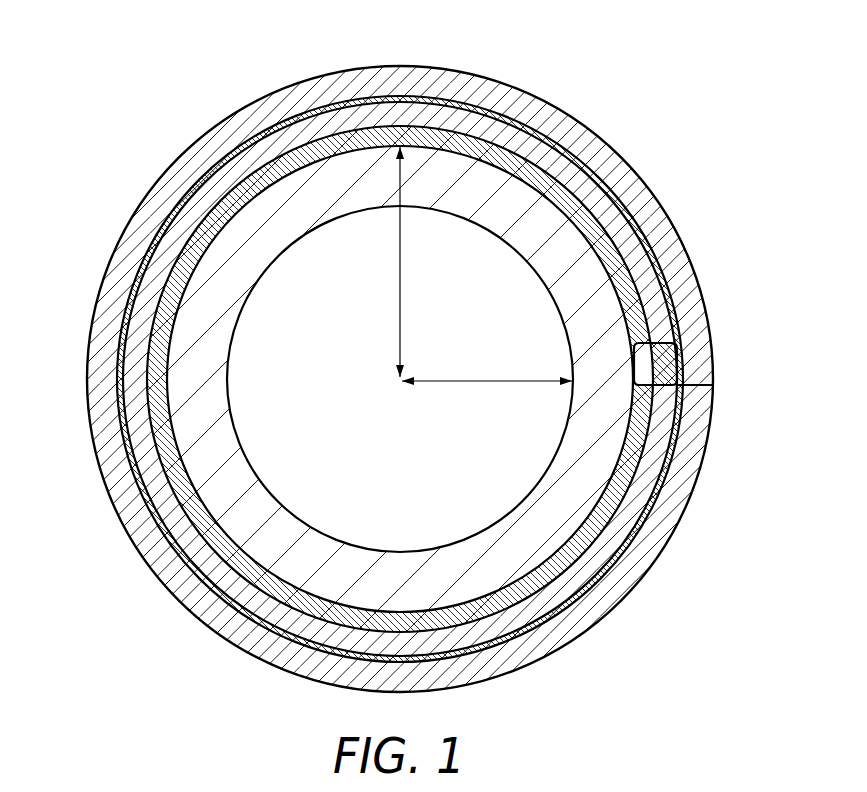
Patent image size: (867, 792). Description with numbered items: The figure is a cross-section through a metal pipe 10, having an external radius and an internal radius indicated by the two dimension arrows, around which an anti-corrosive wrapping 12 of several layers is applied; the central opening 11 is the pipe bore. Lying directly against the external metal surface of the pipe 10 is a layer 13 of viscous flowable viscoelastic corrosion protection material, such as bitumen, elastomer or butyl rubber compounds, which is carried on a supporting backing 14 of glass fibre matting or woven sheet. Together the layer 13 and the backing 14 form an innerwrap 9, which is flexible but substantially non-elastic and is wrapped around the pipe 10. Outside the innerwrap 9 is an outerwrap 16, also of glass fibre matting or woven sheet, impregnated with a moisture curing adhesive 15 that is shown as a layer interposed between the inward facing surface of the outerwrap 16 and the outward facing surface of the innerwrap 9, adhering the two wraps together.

The innerwrap 9 is at (673, 342).
The metal pipe 10 is at (558, 520).
The bore 11 is at (331, 391).
The anti-corrosive wrapping 12 is at (674, 388).
The layer of viscous flowable material 13 is at (592, 222).
The supporting backing 14 is at (305, 133).
The adhesive 15 is at (238, 606).
The outerwrap 16 is at (128, 258).